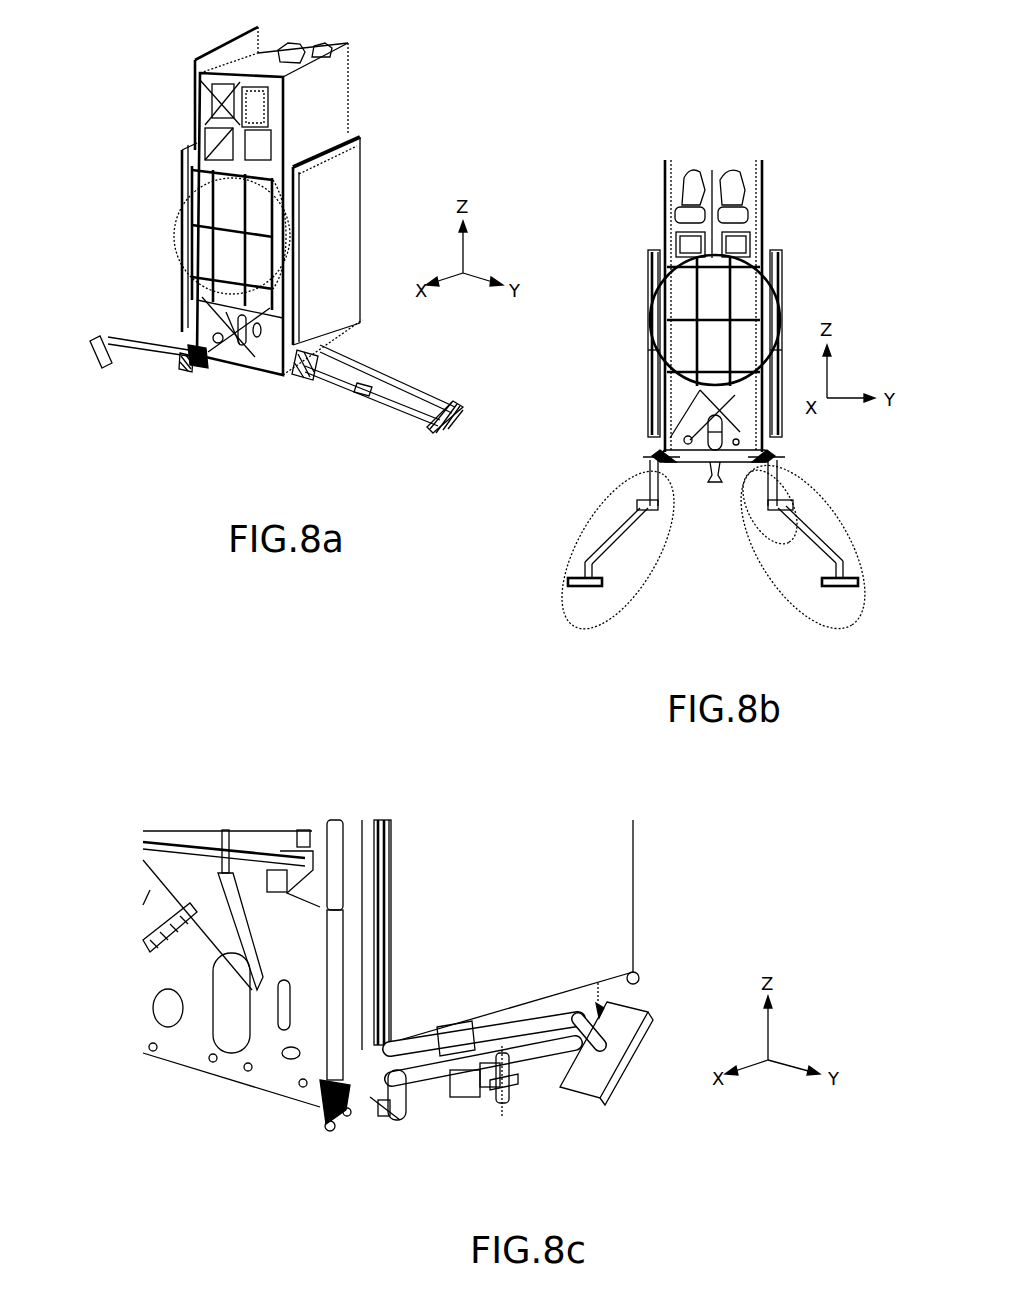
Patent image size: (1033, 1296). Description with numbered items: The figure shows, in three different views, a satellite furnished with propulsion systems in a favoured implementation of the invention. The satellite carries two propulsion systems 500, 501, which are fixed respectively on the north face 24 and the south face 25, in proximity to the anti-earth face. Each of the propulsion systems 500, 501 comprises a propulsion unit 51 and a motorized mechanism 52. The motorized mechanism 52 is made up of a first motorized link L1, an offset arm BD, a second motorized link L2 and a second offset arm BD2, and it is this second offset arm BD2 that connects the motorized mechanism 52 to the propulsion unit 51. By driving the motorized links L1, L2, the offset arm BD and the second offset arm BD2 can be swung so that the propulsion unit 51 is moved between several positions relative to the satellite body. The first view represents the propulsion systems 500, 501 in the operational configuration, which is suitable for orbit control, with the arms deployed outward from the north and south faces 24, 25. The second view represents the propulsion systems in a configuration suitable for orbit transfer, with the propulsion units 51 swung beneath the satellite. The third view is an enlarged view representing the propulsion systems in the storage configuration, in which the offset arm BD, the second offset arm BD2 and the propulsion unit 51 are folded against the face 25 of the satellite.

In FIG. 8A, the north face 24 is at (195, 108).
In FIG. 8A, the south face 25 is at (340, 88).
In FIG. 8C, the south face 25 is at (620, 875).
In FIG. 8A, the propulsion system 500 is at (228, 400).
In FIG. 8B, the propulsion system 500 is at (650, 563).
In FIG. 8A, the propulsion system 501 is at (400, 421).
In FIG. 8B, the propulsion system 501 is at (808, 548).
In FIG. 8A, the propulsion unit 51 is at (472, 391).
In FIG. 8B, the propulsion unit 51 is at (830, 594).
In FIG. 8C, the propulsion unit 51 is at (627, 1065).
In FIG. 8B, the motorized mechanism 52 is at (797, 484).
In FIG. 8A, the motorized link L1 is at (317, 375).
In FIG. 8C, the motorized link L1 is at (510, 1093).
In FIG. 8A, the motorized link L2 is at (357, 393).
In FIG. 8C, the motorized link L2 is at (358, 1117).
In FIG. 8A, the offset arm BD is at (348, 392).
In FIG. 8C, the offset arm BD is at (430, 1107).
In FIG. 8A, the second offset arm BD2 is at (413, 391).
In FIG. 8C, the second offset arm BD2 is at (440, 1025).